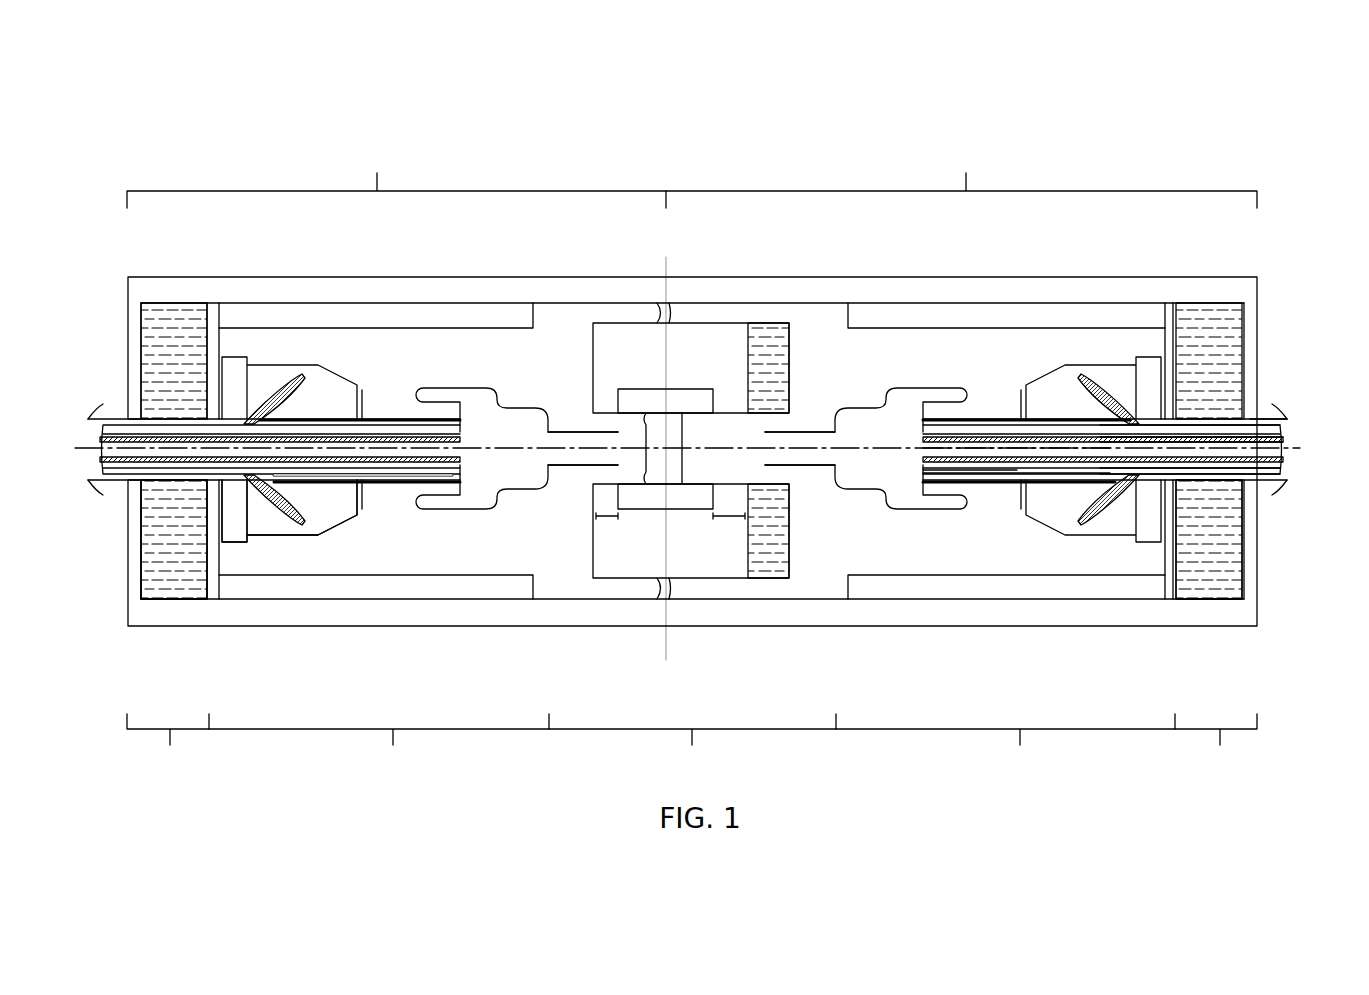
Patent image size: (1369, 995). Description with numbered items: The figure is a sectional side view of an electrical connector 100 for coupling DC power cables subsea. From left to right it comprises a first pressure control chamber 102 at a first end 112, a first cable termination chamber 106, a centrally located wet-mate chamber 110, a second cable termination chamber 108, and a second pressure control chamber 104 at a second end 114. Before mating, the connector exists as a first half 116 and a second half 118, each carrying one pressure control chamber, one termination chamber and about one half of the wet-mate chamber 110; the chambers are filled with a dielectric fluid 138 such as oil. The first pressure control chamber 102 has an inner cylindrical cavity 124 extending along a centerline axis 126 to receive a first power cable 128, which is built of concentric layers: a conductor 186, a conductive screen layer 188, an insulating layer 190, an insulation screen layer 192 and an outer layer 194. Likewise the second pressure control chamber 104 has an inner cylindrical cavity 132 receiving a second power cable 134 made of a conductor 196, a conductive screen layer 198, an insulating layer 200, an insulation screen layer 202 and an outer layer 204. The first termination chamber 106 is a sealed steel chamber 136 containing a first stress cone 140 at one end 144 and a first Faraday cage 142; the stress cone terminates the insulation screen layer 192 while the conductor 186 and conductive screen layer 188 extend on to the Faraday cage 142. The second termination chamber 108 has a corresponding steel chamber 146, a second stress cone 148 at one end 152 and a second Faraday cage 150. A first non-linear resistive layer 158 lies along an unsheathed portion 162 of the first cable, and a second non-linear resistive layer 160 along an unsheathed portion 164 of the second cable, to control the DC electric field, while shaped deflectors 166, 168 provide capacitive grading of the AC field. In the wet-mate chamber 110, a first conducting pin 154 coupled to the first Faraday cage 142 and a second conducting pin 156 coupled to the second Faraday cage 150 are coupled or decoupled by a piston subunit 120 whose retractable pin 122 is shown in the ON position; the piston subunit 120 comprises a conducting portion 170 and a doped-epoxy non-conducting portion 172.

The electrical connector 100 is at (1238, 106).
The first pressure control chamber 102 is at (168, 743).
The second pressure control chamber 104 is at (1216, 743).
The first cable termination chamber 106 is at (379, 743).
The second cable termination chamber 108 is at (1005, 743).
The wet-mate chamber 110 is at (692, 743).
The first end 112 is at (124, 626).
The second end 114 is at (1259, 613).
The first half 116 is at (396, 178).
The second half 118 is at (961, 178).
The piston subunit 120 is at (601, 320).
The retractable pin 122 is at (748, 355).
The inner cylindrical cavity 124 is at (172, 486).
The centerline axis 126 is at (323, 452).
The first power cable 128 is at (107, 487).
The inner cylindrical cavity 132 is at (1198, 489).
The second power cable 134 is at (1270, 490).
The steel chamber 136 is at (345, 303).
The dielectric fluid 138 is at (170, 318).
The first stress cone 140 is at (261, 362).
The first Faraday cage 142 is at (514, 403).
The end of first cable termination chamber 144 is at (222, 584).
The steel chamber 146 is at (955, 303).
The second stress cone 148 is at (1092, 364).
The second Faraday cage 150 is at (868, 405).
The end of second cable termination chamber 152 is at (1163, 582).
The first conducting pin 154 is at (585, 468).
The second conducting pin 156 is at (795, 468).
The first non-linear resistive layer 158 is at (374, 487).
The second non-linear resistive layer 160 is at (976, 487).
The unsheathed portion 162 is at (462, 471).
The unsheathed portion 164 is at (923, 471).
The deflector 166 is at (300, 388).
The deflector 168 is at (1085, 388).
The conducting portion 170 is at (646, 516).
The non-conducting portion 172 is at (671, 531).
The conductor 186 is at (243, 452).
The conductive screen layer 188 is at (126, 500).
The insulating layer 190 is at (102, 436).
The insulation screen layer 192 is at (118, 420).
The outer layer 194 is at (122, 418).
The conductor 196 is at (1286, 448).
The conductive screen layer 198 is at (1283, 430).
The insulating layer 200 is at (1286, 470).
The insulation screen layer 202 is at (1234, 476).
The outer layer 204 is at (1265, 418).